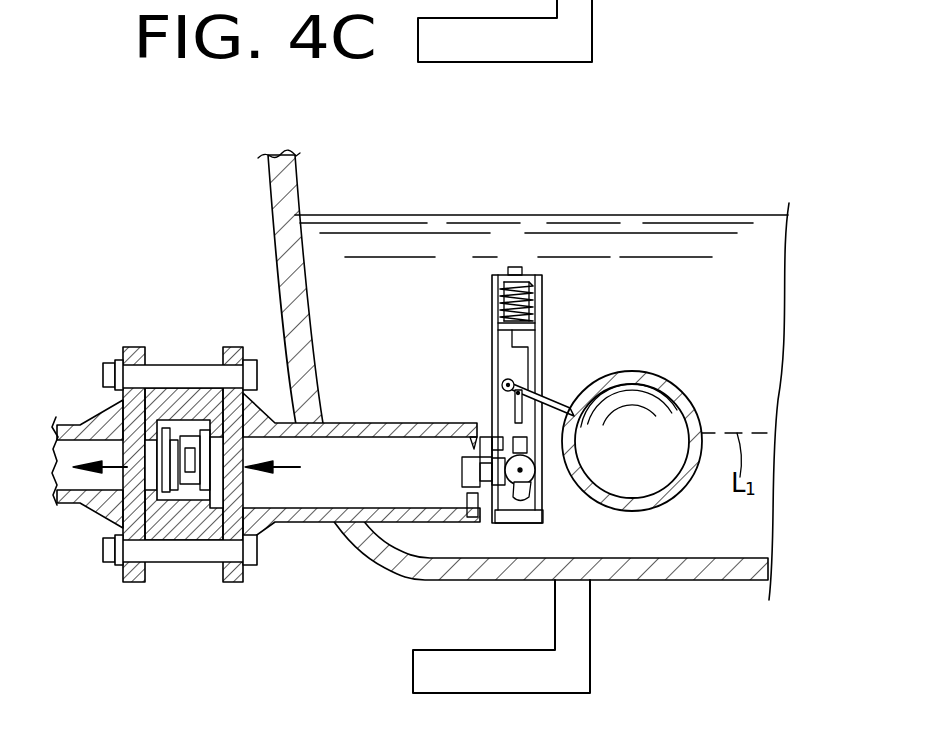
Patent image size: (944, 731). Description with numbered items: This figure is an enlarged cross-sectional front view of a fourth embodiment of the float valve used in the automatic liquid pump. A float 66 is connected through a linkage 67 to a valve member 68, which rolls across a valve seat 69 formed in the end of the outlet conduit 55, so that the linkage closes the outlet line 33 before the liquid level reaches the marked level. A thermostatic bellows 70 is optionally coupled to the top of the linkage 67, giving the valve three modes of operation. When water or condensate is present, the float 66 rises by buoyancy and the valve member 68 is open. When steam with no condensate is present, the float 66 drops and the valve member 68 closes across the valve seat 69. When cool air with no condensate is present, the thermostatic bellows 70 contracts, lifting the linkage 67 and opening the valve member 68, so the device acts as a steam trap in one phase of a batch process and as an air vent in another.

The outlet line 33 is at (70, 430).
The outlet conduit 55 is at (316, 493).
The float 66 is at (645, 460).
The linkage 67 is at (548, 387).
The valve member 68 is at (540, 480).
The valve seat 69 is at (448, 422).
The thermostatic bellows 70 is at (542, 297).